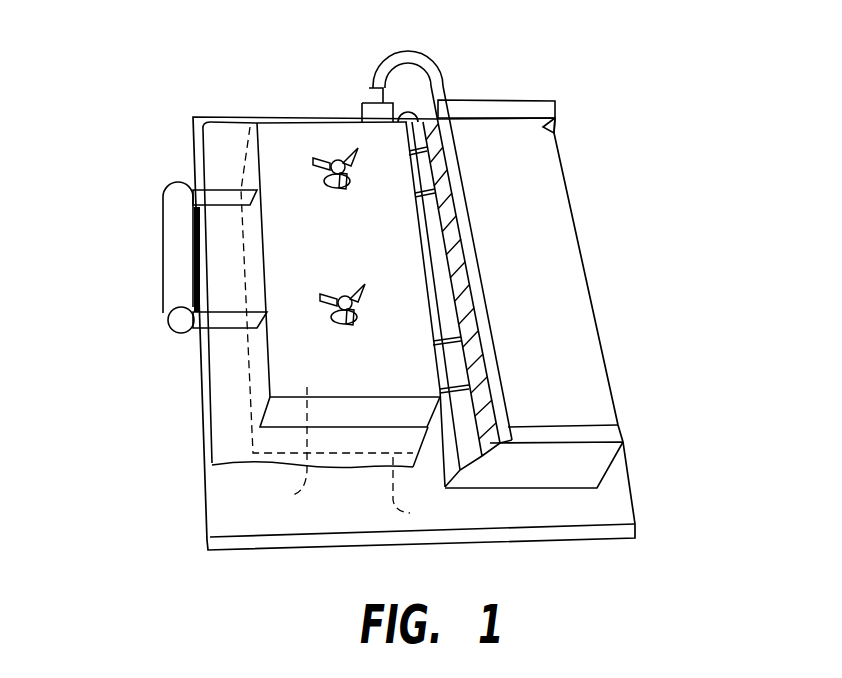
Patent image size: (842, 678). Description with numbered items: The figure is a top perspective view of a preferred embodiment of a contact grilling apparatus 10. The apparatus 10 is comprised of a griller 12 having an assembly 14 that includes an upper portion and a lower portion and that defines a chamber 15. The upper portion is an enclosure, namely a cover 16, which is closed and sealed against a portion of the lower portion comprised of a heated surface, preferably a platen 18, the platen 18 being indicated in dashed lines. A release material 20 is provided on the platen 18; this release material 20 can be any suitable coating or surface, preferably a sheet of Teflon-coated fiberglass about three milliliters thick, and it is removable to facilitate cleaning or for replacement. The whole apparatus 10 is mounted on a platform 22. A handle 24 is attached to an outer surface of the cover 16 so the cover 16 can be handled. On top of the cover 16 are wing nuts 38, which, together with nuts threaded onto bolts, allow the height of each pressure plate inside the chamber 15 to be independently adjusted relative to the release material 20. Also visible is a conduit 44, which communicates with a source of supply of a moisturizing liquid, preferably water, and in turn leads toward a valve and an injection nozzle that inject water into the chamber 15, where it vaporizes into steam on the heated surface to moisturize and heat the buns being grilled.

The contact grilling apparatus 10 is at (177, 90).
The griller 12 is at (255, 362).
The assembly 14 is at (278, 410).
The chamber 15 is at (292, 495).
The cover 16 is at (414, 381).
The platen 18 is at (410, 513).
The release material 20 is at (230, 467).
The platform 22 is at (372, 516).
The handle 24 is at (177, 248).
The wing nuts 38 is at (335, 160).
The conduit 44 is at (406, 50).